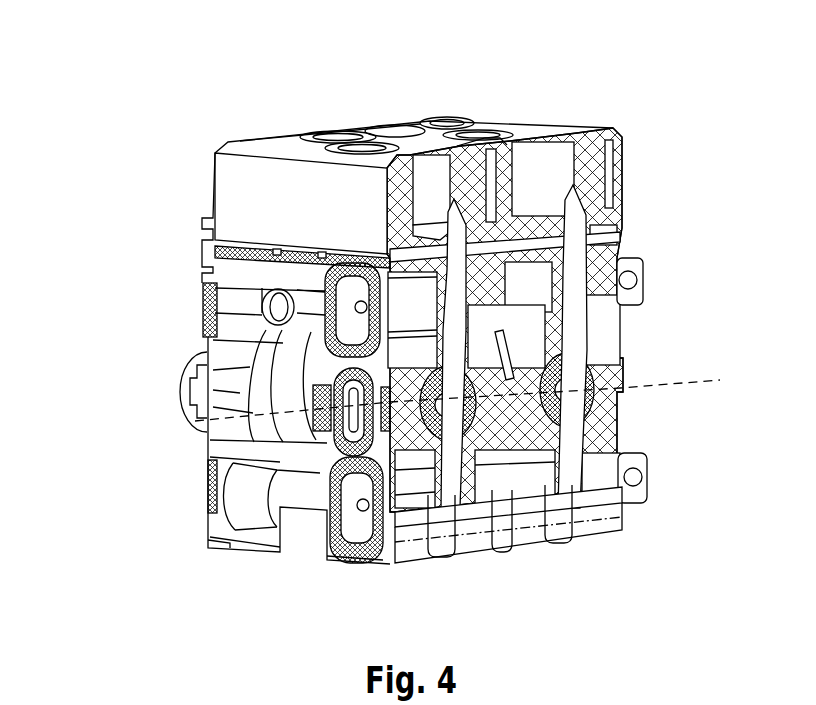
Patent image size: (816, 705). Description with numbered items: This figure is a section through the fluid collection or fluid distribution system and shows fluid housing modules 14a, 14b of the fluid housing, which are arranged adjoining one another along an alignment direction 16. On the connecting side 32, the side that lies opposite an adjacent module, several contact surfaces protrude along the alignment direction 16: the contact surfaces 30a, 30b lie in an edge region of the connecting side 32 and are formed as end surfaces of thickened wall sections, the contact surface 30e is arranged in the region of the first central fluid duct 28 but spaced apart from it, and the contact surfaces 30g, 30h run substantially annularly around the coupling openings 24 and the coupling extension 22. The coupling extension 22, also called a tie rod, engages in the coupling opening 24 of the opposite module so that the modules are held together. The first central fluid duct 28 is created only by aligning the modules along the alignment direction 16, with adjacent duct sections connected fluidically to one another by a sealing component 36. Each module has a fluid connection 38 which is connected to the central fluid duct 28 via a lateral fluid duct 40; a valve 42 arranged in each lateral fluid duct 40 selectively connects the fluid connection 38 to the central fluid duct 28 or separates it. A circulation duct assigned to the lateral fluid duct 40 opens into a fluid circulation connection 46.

The fluid housing module 14a is at (620, 527).
The fluid housing module 14b is at (480, 543).
The alignment direction 16 is at (700, 380).
The coupling extension 22 is at (643, 292).
The coupling opening 24 is at (330, 293).
The first central fluid duct 28 is at (330, 428).
The contact surface 30a is at (200, 293).
The contact surface 30b is at (208, 512).
The contact surface 30e is at (313, 405).
The contact surface 30g is at (203, 313).
The contact surface 30h is at (332, 560).
The connecting side 32 is at (225, 553).
The sealing component 36 is at (195, 392).
The fluid connection 38 is at (427, 133).
The lateral fluid duct 40 is at (467, 252).
The valve 42 is at (480, 383).
The fluid circulation connection 46 is at (452, 115).